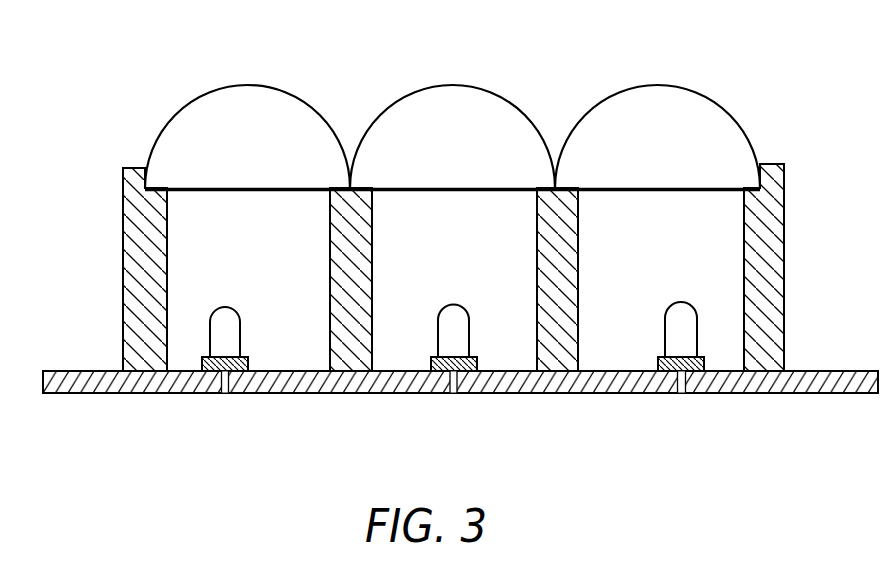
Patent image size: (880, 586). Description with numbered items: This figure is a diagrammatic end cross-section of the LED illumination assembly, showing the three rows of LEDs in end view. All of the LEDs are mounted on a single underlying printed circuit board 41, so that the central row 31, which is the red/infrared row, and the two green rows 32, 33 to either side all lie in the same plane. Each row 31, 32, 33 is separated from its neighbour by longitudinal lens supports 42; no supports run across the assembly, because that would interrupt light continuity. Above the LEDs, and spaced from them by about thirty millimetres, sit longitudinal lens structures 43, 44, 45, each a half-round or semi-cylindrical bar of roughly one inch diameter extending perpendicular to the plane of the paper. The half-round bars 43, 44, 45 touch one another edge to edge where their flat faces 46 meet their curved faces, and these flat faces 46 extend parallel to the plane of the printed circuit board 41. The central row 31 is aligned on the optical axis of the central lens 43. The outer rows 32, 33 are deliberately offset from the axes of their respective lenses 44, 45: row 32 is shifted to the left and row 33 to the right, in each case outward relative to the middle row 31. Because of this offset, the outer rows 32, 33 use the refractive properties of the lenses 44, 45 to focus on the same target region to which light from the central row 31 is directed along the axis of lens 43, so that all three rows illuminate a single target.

The central row of LEDs 31 is at (462, 320).
The outer row of LEDs 32 is at (233, 328).
The outer row of LEDs 33 is at (687, 315).
The printed circuit board 41 is at (137, 397).
The longitudinal lens support 42 is at (123, 267).
The central lens 43 is at (483, 117).
The lens 44 is at (287, 117).
The lens 45 is at (703, 112).
The flat face 46 is at (277, 190).